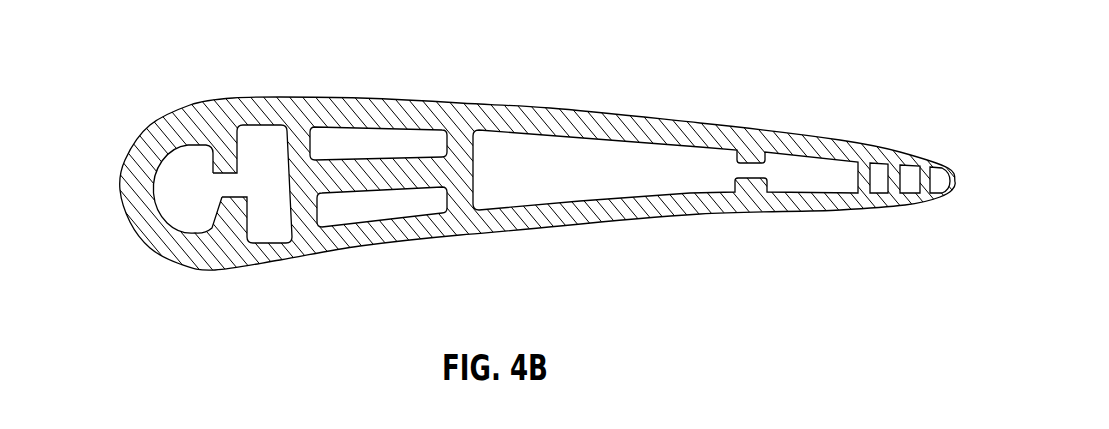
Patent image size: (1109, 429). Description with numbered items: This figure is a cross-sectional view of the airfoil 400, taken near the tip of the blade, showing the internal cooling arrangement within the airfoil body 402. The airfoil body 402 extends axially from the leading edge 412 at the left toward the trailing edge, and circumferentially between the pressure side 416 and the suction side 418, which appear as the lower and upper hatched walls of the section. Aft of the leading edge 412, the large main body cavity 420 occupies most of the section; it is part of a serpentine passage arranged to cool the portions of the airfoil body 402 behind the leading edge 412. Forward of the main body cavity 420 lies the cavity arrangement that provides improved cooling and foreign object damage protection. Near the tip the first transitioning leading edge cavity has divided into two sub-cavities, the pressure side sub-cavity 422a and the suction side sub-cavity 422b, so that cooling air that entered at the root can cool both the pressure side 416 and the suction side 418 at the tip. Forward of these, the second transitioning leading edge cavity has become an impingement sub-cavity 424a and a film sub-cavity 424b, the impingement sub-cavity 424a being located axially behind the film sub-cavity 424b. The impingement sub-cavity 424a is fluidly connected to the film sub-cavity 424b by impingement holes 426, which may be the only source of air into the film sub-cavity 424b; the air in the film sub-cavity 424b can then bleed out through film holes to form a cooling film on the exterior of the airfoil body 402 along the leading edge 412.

The airfoil 400 is at (873, 58).
The airfoil body 402 is at (757, 145).
The leading edge 412 is at (125, 222).
The pressure side 416 is at (246, 268).
The suction side 418 is at (461, 99).
The main body cavity 420 is at (623, 163).
The pressure side sub-cavity 422a is at (391, 204).
The suction side sub-cavity 422b is at (373, 146).
The impingement sub-cavity 424a is at (259, 146).
The film sub-cavity 424b is at (180, 210).
The impingement holes 426 is at (226, 187).